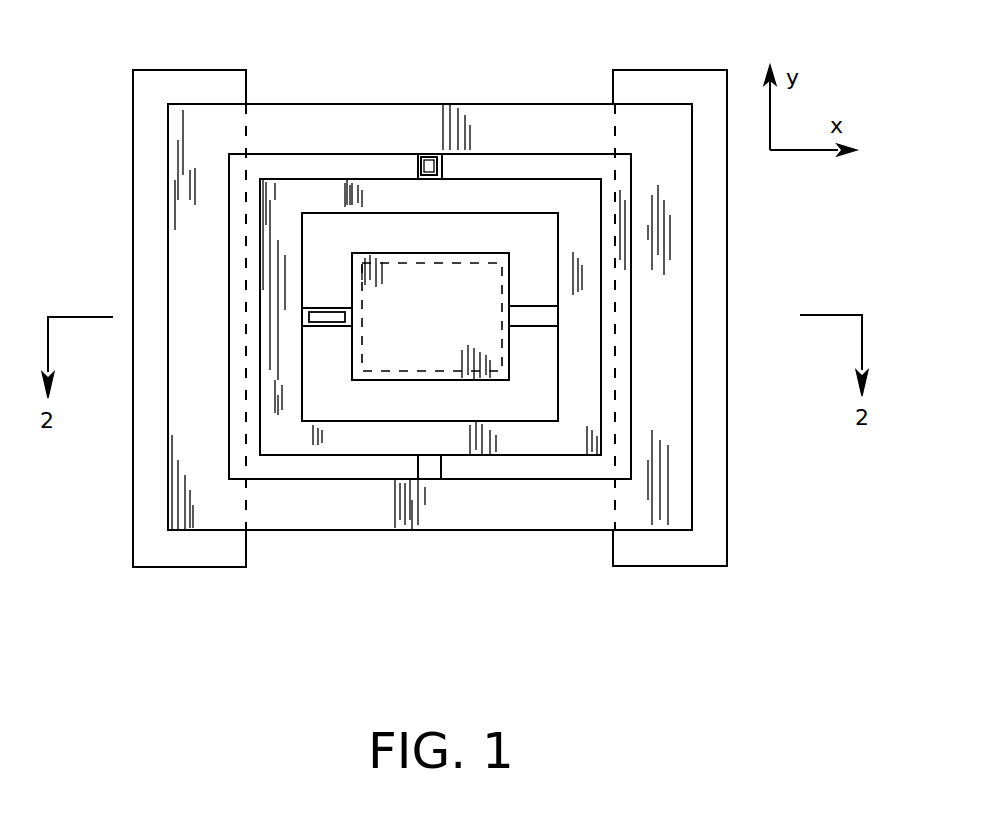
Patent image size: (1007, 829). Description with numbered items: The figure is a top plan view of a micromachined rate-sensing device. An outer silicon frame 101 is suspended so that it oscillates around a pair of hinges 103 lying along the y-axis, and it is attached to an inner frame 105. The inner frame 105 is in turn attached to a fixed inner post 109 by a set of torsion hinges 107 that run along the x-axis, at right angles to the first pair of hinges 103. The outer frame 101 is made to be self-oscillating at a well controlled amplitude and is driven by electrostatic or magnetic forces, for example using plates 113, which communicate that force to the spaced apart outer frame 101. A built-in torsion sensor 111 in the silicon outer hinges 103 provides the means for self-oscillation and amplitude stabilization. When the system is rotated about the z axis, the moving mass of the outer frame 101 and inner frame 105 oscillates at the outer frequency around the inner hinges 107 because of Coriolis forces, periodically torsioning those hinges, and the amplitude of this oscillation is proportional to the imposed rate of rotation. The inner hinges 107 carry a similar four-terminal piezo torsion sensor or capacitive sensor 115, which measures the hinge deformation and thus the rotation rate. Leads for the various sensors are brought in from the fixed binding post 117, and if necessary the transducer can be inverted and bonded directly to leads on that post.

The outer silicon frame 101 is at (563, 137).
The hinges 103 is at (417, 166).
The inner frame 105 is at (392, 448).
The torsion hinges 107 is at (325, 328).
The fixed inner post 109 is at (445, 305).
The torsion sensor 111 is at (423, 158).
The plates 113 is at (190, 71).
The four-terminal piezo torsion sensor or capacitive sensor 115 is at (327, 312).
The fixed binding post 117 is at (363, 333).